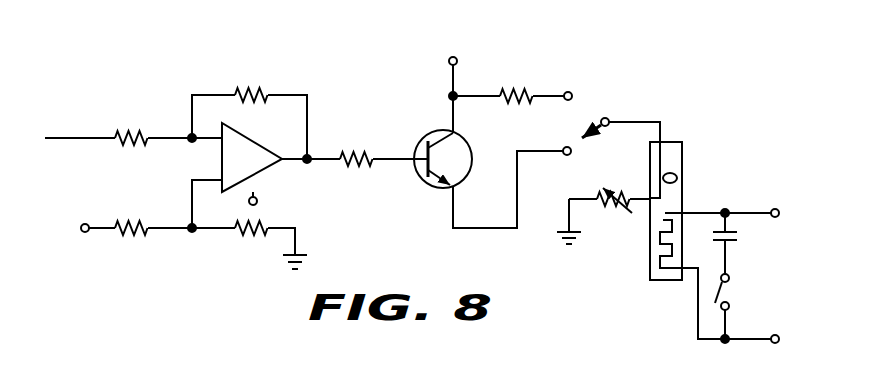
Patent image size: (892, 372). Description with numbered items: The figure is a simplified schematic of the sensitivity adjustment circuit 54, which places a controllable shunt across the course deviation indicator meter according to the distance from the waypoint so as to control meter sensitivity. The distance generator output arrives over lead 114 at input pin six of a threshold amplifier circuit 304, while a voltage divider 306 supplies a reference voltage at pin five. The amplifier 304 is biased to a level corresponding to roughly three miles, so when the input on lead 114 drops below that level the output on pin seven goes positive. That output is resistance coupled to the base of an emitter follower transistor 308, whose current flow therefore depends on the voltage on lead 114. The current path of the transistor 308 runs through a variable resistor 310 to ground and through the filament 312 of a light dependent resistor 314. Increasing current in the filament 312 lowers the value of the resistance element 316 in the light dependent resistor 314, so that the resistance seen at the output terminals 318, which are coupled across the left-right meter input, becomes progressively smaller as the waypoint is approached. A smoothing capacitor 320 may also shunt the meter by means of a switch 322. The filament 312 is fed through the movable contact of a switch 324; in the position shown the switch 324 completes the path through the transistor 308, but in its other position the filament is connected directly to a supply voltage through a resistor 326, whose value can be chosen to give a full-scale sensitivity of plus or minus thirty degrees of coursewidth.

The sensitivity adjustment circuit 54 is at (380, 55).
The lead 114 is at (100, 137).
The threshold amplifier circuit 304 is at (312, 203).
The voltage divider 306 is at (137, 232).
The emitter follower transistor 308 is at (426, 133).
The variable resistor 310 is at (603, 216).
The filament 312 is at (677, 173).
The light dependent resistor 314 is at (682, 147).
The resistance element 316 is at (660, 265).
The output terminals 318 is at (752, 278).
The smoothing capacitor 320 is at (732, 243).
The switch 322 is at (727, 293).
The switch 324 is at (588, 104).
The resistor 326 is at (513, 92).